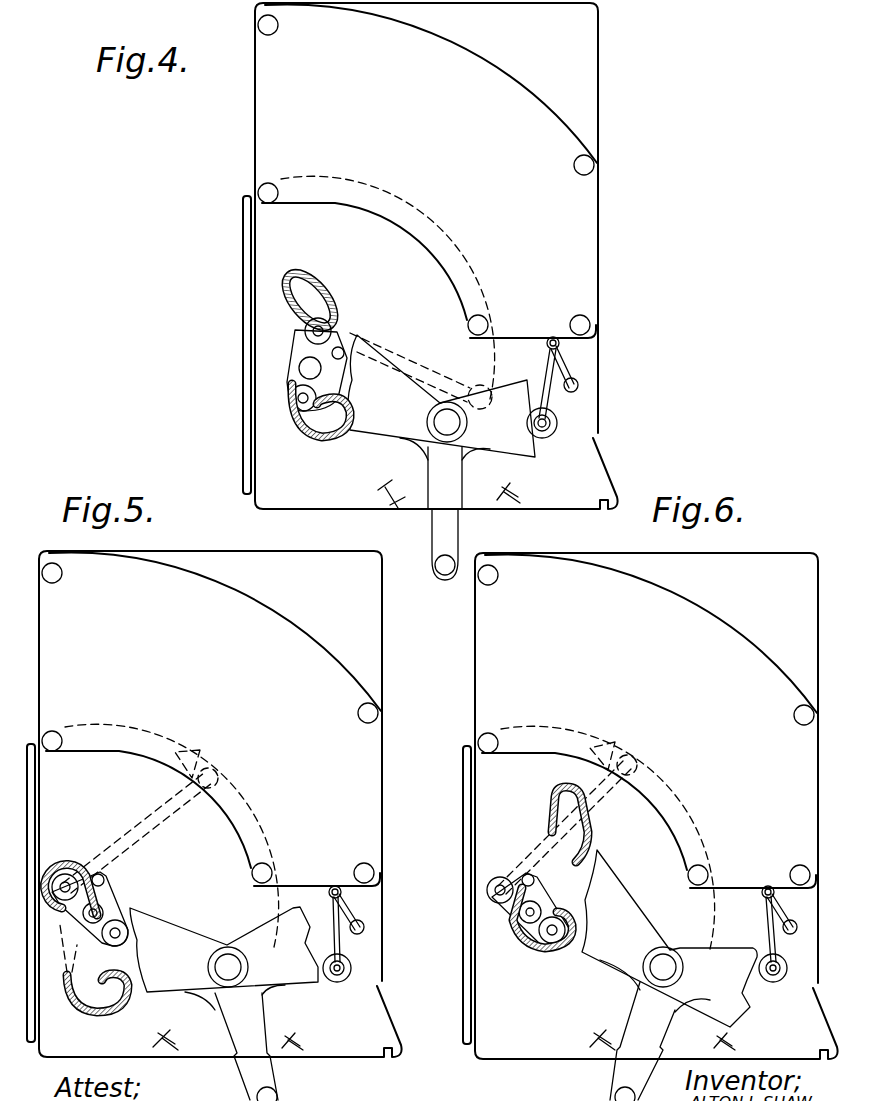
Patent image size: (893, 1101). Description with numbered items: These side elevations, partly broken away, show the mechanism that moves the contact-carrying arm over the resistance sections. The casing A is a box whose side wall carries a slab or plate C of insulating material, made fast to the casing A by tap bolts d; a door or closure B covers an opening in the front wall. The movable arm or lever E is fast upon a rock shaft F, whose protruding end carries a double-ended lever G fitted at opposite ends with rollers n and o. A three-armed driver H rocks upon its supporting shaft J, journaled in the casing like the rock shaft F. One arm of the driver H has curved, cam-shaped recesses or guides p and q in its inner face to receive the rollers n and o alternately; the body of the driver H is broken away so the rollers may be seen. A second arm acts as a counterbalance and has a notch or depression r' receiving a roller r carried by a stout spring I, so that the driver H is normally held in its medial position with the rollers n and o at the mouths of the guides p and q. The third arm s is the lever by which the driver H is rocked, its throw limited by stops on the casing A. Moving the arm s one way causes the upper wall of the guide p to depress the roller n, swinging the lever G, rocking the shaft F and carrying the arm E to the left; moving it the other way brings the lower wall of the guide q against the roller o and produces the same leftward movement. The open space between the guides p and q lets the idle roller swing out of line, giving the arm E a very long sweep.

In FIG. 4, the box, shell or casing A is at (436, 256).
In FIG. 5, the box, shell or casing A is at (220, 804).
In FIG. 6, the box, shell or casing A is at (656, 806).
In FIG. 4, the door or closure B is at (233, 345).
In FIG. 5, the door or closure B is at (30, 780).
In FIG. 6, the door or closure B is at (456, 895).
In FIG. 4, the slab or plate of insulating material C is at (429, 287).
In FIG. 5, the slab or plate of insulating material C is at (213, 816).
In FIG. 6, the slab or plate of insulating material C is at (649, 807).
In FIG. 4, the tap bolts d is at (279, 25).
In FIG. 5, the tap bolts d is at (63, 573).
In FIG. 6, the tap bolts d is at (499, 575).
In FIG. 4, the movable arm or lever E is at (425, 358).
In FIG. 5, the movable arm or lever E is at (140, 822).
In FIG. 6, the movable arm or lever E is at (532, 833).
In FIG. 4, the rock shaft F is at (300, 368).
In FIG. 5, the rock shaft F is at (90, 916).
In FIG. 6, the rock shaft F is at (520, 927).
In FIG. 4, the double-ended lever G is at (339, 381).
In FIG. 5, the double-ended lever G is at (118, 900).
In FIG. 6, the double-ended lever G is at (541, 896).
In FIG. 4, the driver H is at (441, 396).
In FIG. 5, the driver H is at (224, 949).
In FIG. 6, the driver H is at (669, 938).
In FIG. 4, the stout spring I is at (539, 371).
In FIG. 5, the stout spring I is at (332, 918).
In FIG. 6, the stout spring I is at (772, 924).
In FIG. 4, the supporting shaft J is at (456, 432).
In FIG. 5, the supporting shaft J is at (227, 955).
In FIG. 6, the supporting shaft J is at (668, 952).
In FIG. 4, the roller n is at (324, 316).
In FIG. 5, the roller n is at (68, 875).
In FIG. 6, the roller n is at (497, 880).
In FIG. 4, the roller o is at (298, 412).
In FIG. 5, the roller o is at (108, 953).
In FIG. 6, the roller o is at (530, 950).
In FIG. 4, the curved or cam-shaped recess or guide p is at (298, 290).
In FIG. 5, the curved or cam-shaped recess or guide p is at (55, 863).
In FIG. 6, the curved or cam-shaped recess or guide p is at (557, 798).
In FIG. 4, the curved or cam-shaped recess or guide q is at (333, 418).
In FIG. 5, the curved or cam-shaped recess or guide q is at (108, 993).
In FIG. 6, the curved or cam-shaped recess or guide q is at (556, 955).
In FIG. 4, the roller r is at (556, 433).
In FIG. 5, the roller r is at (338, 995).
In FIG. 6, the roller r is at (785, 970).
In FIG. 4, the notch or depression r' is at (525, 430).
In FIG. 5, the notch or depression r' is at (308, 960).
In FIG. 6, the notch or depression r' is at (771, 985).
In FIG. 4, the third arm s is at (449, 509).
In FIG. 5, the third arm s is at (228, 1043).
In FIG. 6, the third arm s is at (662, 1030).